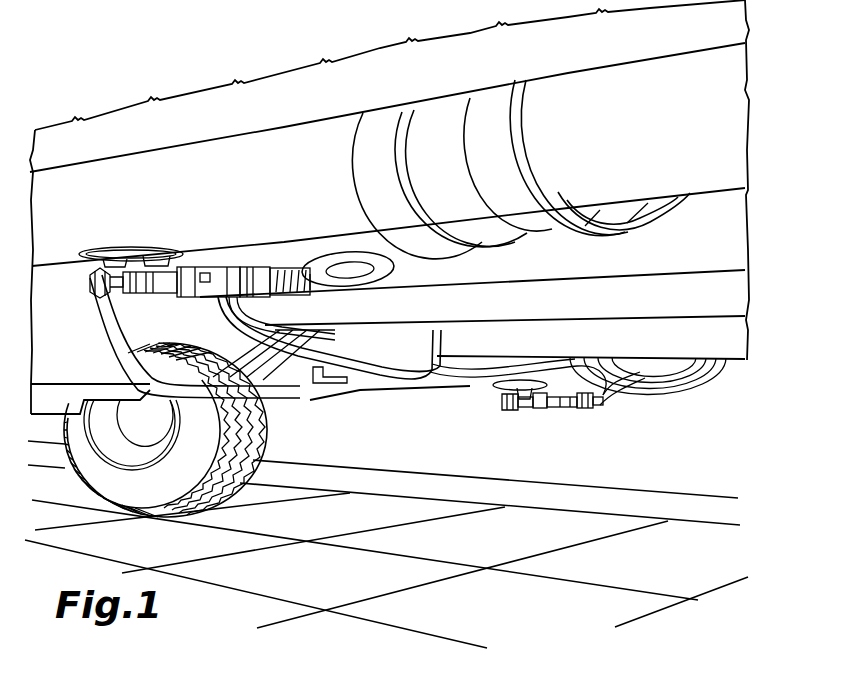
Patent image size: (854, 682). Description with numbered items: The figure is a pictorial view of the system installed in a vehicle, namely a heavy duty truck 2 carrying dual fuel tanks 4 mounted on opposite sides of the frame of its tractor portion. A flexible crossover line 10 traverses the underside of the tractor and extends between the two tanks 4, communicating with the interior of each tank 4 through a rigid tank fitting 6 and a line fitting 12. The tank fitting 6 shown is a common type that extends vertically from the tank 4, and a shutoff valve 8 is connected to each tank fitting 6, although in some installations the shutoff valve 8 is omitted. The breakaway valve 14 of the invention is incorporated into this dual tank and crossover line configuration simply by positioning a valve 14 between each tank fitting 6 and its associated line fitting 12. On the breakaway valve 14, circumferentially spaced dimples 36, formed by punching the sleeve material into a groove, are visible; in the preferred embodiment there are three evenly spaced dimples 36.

The heavy duty truck 2 is at (144, 80).
The fuel tank 4 is at (123, 207).
The tank fitting 6 is at (197, 268).
The shutoff valve 8 is at (100, 304).
The flexible crossover line 10 is at (393, 272).
The line fitting 12 is at (278, 268).
The breakaway valve 14 is at (200, 306).
The dimples 36 is at (238, 268).